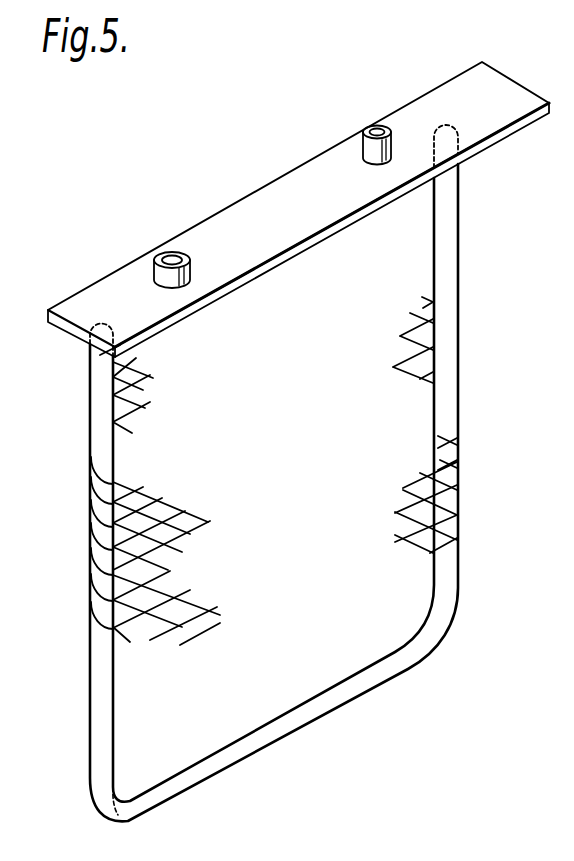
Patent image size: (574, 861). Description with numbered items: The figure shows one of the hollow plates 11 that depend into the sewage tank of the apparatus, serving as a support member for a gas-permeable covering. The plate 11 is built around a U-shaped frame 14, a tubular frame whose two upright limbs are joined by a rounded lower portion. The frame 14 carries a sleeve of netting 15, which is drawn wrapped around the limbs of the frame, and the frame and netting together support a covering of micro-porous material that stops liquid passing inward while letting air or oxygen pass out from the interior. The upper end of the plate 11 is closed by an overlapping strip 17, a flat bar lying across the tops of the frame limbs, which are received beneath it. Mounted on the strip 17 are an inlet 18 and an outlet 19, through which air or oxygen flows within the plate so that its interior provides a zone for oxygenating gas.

The hollow plate 11 is at (72, 512).
The U-shaped frame 14 is at (97, 784).
The sleeve of netting 15 is at (146, 577).
The overlapping strip 17 is at (291, 192).
The inlet 18 is at (174, 250).
The outlet 19 is at (375, 125).